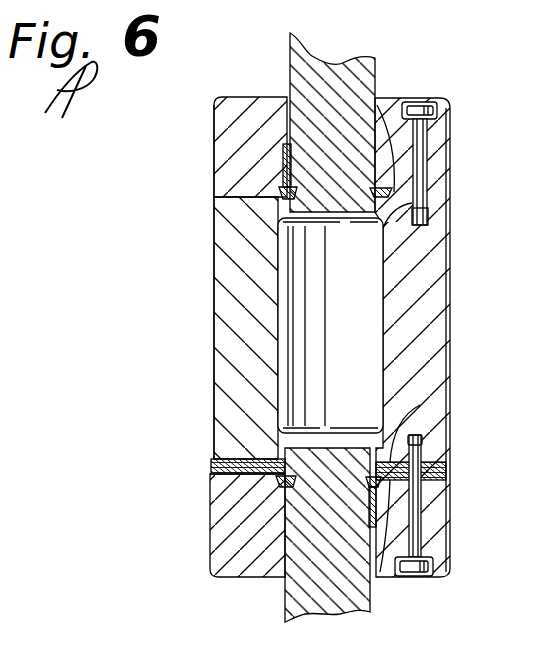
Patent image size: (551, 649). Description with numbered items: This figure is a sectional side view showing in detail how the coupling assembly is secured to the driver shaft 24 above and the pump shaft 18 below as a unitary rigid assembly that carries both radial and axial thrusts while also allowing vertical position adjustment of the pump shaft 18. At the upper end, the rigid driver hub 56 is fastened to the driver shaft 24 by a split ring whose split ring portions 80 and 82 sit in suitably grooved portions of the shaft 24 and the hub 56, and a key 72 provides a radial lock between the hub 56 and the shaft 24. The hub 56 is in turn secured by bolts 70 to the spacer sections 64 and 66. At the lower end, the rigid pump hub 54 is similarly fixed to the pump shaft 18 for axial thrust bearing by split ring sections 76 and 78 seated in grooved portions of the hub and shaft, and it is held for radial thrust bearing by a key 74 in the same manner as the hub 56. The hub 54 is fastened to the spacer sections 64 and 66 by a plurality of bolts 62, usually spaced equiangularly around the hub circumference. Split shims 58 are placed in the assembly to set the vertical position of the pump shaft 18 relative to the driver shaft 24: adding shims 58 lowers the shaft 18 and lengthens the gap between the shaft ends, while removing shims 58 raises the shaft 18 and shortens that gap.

The pump shaft 18 is at (297, 597).
The driver shaft 24 is at (380, 63).
The rigid pump hub 54 is at (208, 560).
The rigid driver hub 56 is at (214, 157).
The split shims 58 is at (211, 462).
The bolts 62 is at (413, 580).
The spacer section 64 is at (214, 290).
The spacer section 66 is at (450, 326).
The bolts 70 is at (418, 100).
The key 72 is at (287, 160).
The key 74 is at (377, 507).
The split ring section 76 is at (283, 478).
The split ring section 78 is at (447, 483).
The split ring portion 80 is at (393, 188).
The split ring portion 82 is at (234, 197).